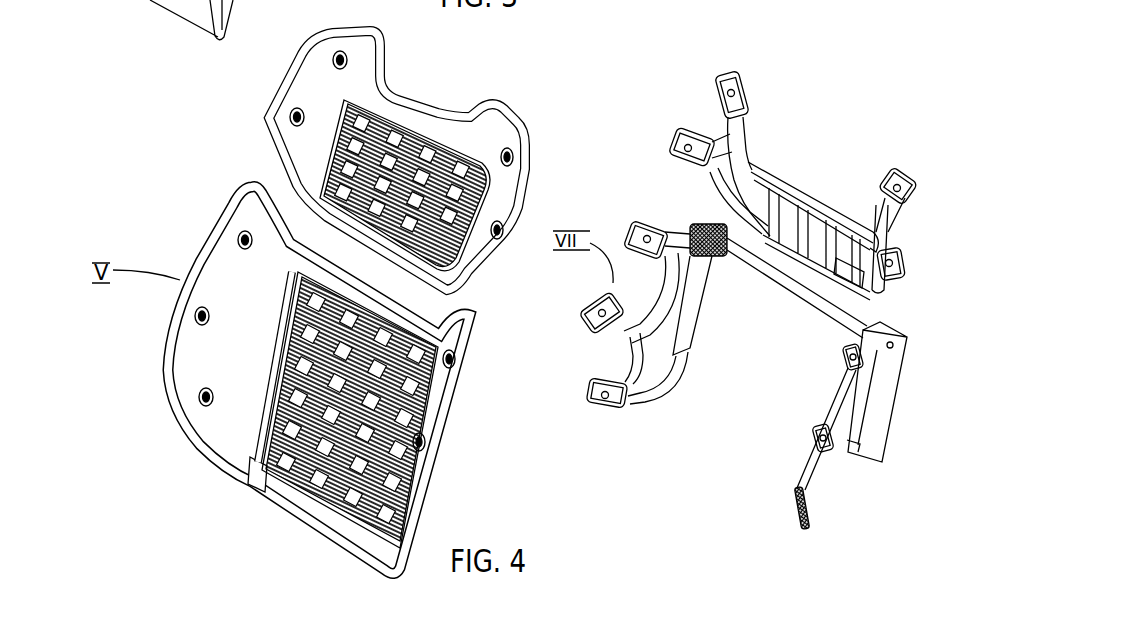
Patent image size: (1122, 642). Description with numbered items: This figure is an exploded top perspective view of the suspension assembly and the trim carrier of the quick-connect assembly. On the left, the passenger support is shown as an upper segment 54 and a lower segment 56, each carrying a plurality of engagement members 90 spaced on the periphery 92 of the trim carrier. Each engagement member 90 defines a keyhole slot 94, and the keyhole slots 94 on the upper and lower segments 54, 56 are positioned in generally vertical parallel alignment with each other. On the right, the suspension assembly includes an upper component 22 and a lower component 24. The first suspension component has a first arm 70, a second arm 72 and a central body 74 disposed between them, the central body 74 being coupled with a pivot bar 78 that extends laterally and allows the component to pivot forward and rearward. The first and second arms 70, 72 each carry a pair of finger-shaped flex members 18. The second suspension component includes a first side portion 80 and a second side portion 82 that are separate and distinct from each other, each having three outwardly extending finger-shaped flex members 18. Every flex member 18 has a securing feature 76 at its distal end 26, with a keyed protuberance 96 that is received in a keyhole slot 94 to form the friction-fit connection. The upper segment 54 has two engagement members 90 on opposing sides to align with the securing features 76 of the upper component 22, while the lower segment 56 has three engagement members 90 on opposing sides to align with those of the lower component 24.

The flex member 18 is at (750, 118).
The upper component 22 is at (734, 208).
The lower component 24 is at (736, 307).
The distal end 26 is at (722, 78).
The upper segment 54 is at (262, 125).
The lower segment 56 is at (300, 380).
The first arm 70 is at (848, 272).
The second arm 72 is at (750, 150).
The central body 74 is at (780, 200).
The securing feature 76 is at (746, 78).
The pivot bar 78 is at (740, 272).
The first side portion 80 is at (872, 425).
The second side portion 82 is at (695, 335).
The engagement member 90 is at (345, 52).
The periphery 92 is at (195, 258).
The keyhole slot 94 is at (338, 52).
The keyed protuberance 96 is at (727, 94).